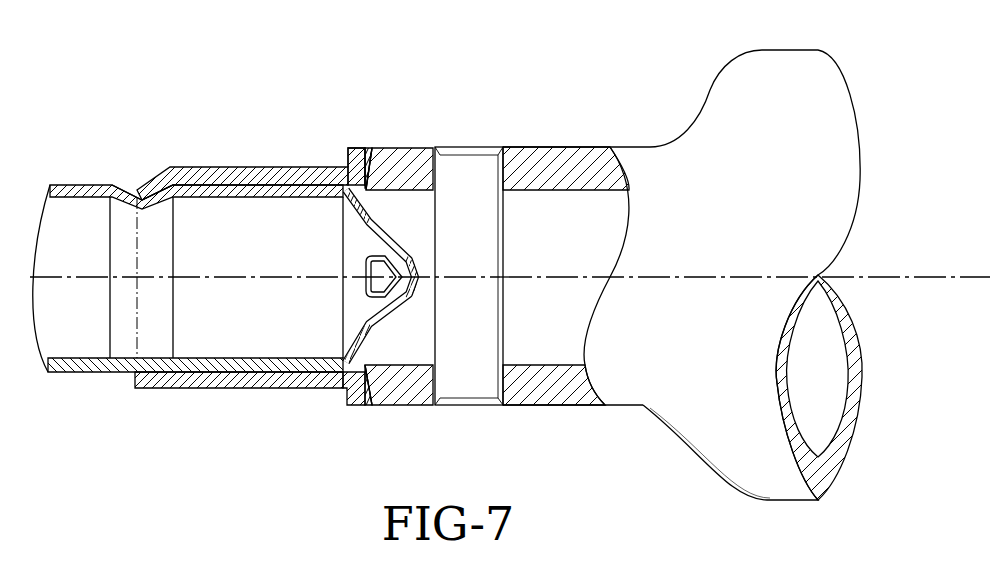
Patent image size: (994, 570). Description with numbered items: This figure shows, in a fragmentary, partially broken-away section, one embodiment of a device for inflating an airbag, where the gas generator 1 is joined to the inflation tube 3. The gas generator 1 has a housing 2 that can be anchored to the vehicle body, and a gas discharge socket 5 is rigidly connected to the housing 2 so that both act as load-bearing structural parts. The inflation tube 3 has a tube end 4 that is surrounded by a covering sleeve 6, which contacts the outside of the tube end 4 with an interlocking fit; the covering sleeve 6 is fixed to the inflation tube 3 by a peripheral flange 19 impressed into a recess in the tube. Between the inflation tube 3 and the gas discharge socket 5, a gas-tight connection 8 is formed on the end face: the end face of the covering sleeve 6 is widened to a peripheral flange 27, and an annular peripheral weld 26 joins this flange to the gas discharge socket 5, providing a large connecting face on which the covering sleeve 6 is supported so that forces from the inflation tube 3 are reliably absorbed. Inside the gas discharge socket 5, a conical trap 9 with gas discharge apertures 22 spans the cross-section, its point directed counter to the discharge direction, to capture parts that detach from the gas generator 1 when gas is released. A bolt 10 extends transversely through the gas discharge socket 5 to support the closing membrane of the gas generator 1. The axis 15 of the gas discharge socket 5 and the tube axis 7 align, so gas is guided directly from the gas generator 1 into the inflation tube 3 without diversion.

The gas generator 1 is at (723, 256).
The housing 2 is at (780, 65).
The inflation tube 3 is at (107, 365).
The tube end 4 is at (273, 188).
The gas discharge socket 5 is at (568, 392).
The covering sleeve 6 is at (255, 382).
The tube axis 7 is at (225, 277).
The gas-tight connection 8 is at (374, 146).
The trap 9 is at (372, 335).
The bolt 10 is at (470, 185).
The axis 15 is at (675, 275).
The peripheral flange 19 is at (137, 188).
The gas discharge apertures 22 is at (387, 247).
The peripheral weld 26 is at (368, 155).
The peripheral flange 27 is at (352, 158).